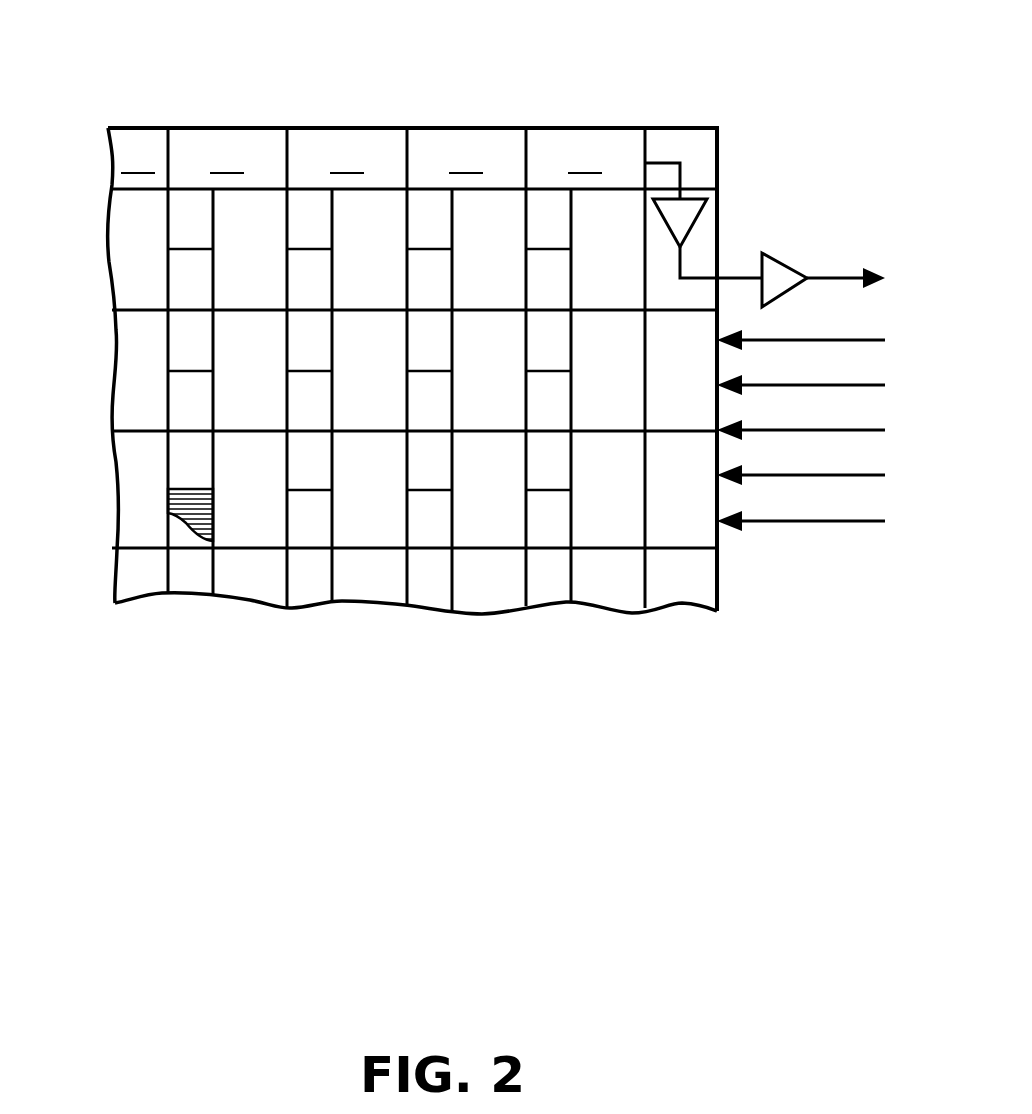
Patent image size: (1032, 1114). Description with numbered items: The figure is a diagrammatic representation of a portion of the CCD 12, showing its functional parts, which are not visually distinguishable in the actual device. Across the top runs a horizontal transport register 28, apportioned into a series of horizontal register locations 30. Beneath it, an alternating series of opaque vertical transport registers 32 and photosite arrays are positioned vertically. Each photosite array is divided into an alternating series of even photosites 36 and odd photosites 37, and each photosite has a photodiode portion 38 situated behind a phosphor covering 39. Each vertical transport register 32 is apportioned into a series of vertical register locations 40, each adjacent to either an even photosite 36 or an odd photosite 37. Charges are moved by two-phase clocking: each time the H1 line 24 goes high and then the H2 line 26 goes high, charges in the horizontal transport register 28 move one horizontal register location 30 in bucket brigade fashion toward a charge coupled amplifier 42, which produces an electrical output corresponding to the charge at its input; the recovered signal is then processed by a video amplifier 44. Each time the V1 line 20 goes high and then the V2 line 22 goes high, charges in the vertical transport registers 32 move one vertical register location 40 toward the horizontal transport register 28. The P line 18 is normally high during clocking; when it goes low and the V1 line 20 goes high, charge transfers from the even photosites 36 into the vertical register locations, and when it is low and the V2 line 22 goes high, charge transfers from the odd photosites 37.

The CCD 12 is at (92, 82).
The P line 18 is at (790, 521).
The V1 line 20 is at (790, 475).
The V2 line 22 is at (782, 430).
The H1 line 24 is at (788, 340).
The H2 line 26 is at (781, 385).
The horizontal transport register 28 is at (478, 128).
The horizontal register location 30 is at (383, 158).
The vertical transport register 32 is at (162, 590).
The even photosite 36 is at (372, 400).
The odd photosite 37 is at (369, 392).
The photodiode portion 38 is at (192, 500).
The phosphor covering 39 is at (180, 530).
The vertical register location 40 is at (387, 398).
The charge coupled amplifier 42 is at (686, 217).
The video amplifier 44 is at (778, 275).